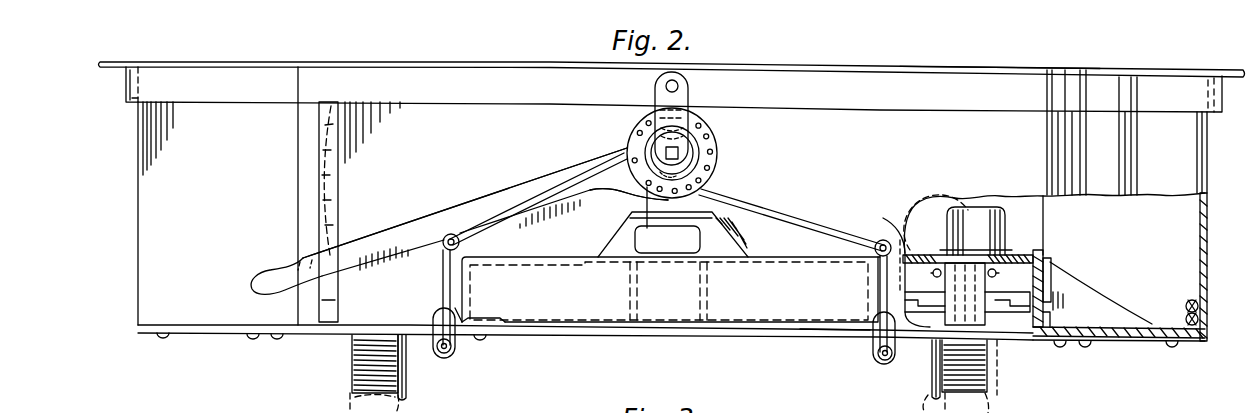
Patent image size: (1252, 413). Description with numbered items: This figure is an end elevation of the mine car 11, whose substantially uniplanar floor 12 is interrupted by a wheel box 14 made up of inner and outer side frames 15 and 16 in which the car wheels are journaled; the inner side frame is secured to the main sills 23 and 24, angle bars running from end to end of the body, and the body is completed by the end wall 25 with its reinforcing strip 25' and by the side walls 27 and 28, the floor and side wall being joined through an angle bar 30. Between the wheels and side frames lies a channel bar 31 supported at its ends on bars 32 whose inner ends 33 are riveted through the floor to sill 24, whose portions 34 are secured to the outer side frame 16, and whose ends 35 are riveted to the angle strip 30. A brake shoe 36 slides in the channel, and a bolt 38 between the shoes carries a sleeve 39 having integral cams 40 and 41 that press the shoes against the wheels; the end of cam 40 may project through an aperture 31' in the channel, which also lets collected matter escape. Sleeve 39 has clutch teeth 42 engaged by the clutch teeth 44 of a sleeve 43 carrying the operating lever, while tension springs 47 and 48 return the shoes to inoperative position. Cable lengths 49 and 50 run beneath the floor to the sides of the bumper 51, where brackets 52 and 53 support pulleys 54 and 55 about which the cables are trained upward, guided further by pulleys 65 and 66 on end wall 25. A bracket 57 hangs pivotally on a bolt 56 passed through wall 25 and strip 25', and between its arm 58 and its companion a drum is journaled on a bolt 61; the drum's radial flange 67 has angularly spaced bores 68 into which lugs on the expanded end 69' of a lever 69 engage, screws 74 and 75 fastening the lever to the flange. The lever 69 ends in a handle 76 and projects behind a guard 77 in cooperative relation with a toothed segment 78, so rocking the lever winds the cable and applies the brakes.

The mine car 11 is at (980, 72).
The floor 12 is at (1114, 339).
The wheel box 14 is at (1026, 244).
The inner side frame 15 is at (900, 236).
The outer side frame 16 is at (1045, 265).
The main sill 23 is at (492, 320).
The main sill 24 is at (836, 326).
The end wall 25 is at (674, 85).
The reinforcing strip 25' is at (672, 57).
The side wall 27 is at (137, 241).
The side wall 28 is at (1207, 256).
The angle bar 30 is at (1188, 312).
The channel bar 31 is at (985, 352).
The aperture 31' is at (920, 369).
The bars 32 is at (1045, 342).
The inner ends of bars 33 is at (838, 338).
The portions of bars 34 is at (1070, 343).
The ends of bars 35 is at (1172, 344).
The brake shoe 36 is at (976, 270).
The bolt 38 is at (1053, 298).
The sleeve 39 is at (992, 302).
The cam 40 is at (966, 376).
The cam 41 is at (950, 260).
The clutch teeth 42 is at (1046, 319).
The sleeve 43 is at (905, 294).
The clutch teeth 44 is at (909, 330).
The tension spring 47 is at (1036, 256).
The tension spring 48 is at (915, 246).
The cable length 49 is at (514, 202).
The cable length 50 is at (812, 214).
The bumper 51 is at (740, 323).
The bracket 52 is at (458, 325).
The bracket 53 is at (872, 338).
The pulley 54 is at (452, 352).
The pulley 55 is at (880, 358).
The bolt 56 is at (688, 74).
The bracket 57 is at (689, 97).
The arm 58 is at (660, 138).
The bolt 61 is at (689, 160).
The pulley 65 is at (460, 242).
The pulley 66 is at (874, 248).
The radial flange 67 is at (707, 128).
The bores 68 is at (714, 152).
The lever 69 is at (483, 212).
The expanded end 69' is at (629, 203).
The screw 74 is at (628, 160).
The screw 75 is at (673, 222).
The handle 76 is at (268, 272).
The guard 77 is at (336, 196).
The toothed segment 78 is at (317, 198).